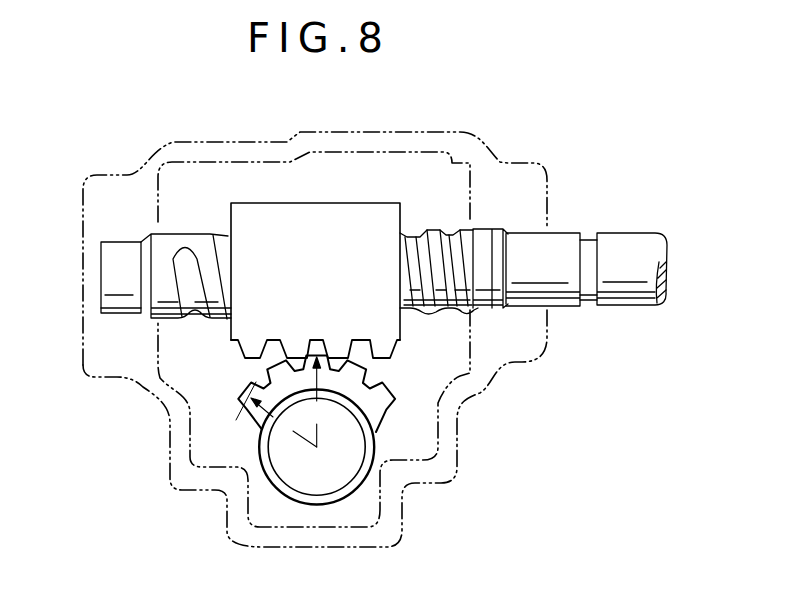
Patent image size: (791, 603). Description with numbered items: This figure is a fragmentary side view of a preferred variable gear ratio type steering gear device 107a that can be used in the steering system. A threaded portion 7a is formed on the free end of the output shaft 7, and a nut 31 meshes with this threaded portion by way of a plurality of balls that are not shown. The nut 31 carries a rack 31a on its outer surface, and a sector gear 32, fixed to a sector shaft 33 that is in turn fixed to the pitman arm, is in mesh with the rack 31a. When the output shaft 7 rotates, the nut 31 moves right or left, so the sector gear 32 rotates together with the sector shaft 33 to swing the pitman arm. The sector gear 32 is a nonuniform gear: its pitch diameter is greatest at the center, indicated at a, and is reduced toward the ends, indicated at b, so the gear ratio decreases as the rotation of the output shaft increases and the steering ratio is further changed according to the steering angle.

The variable gear ratio type steering gear device 107a is at (399, 127).
The output shaft 7 is at (620, 245).
The worm 7a is at (414, 229).
The nut 31 is at (340, 218).
The rack 31a is at (393, 348).
The sector gear 32 is at (369, 407).
The sector shaft 33 is at (322, 483).